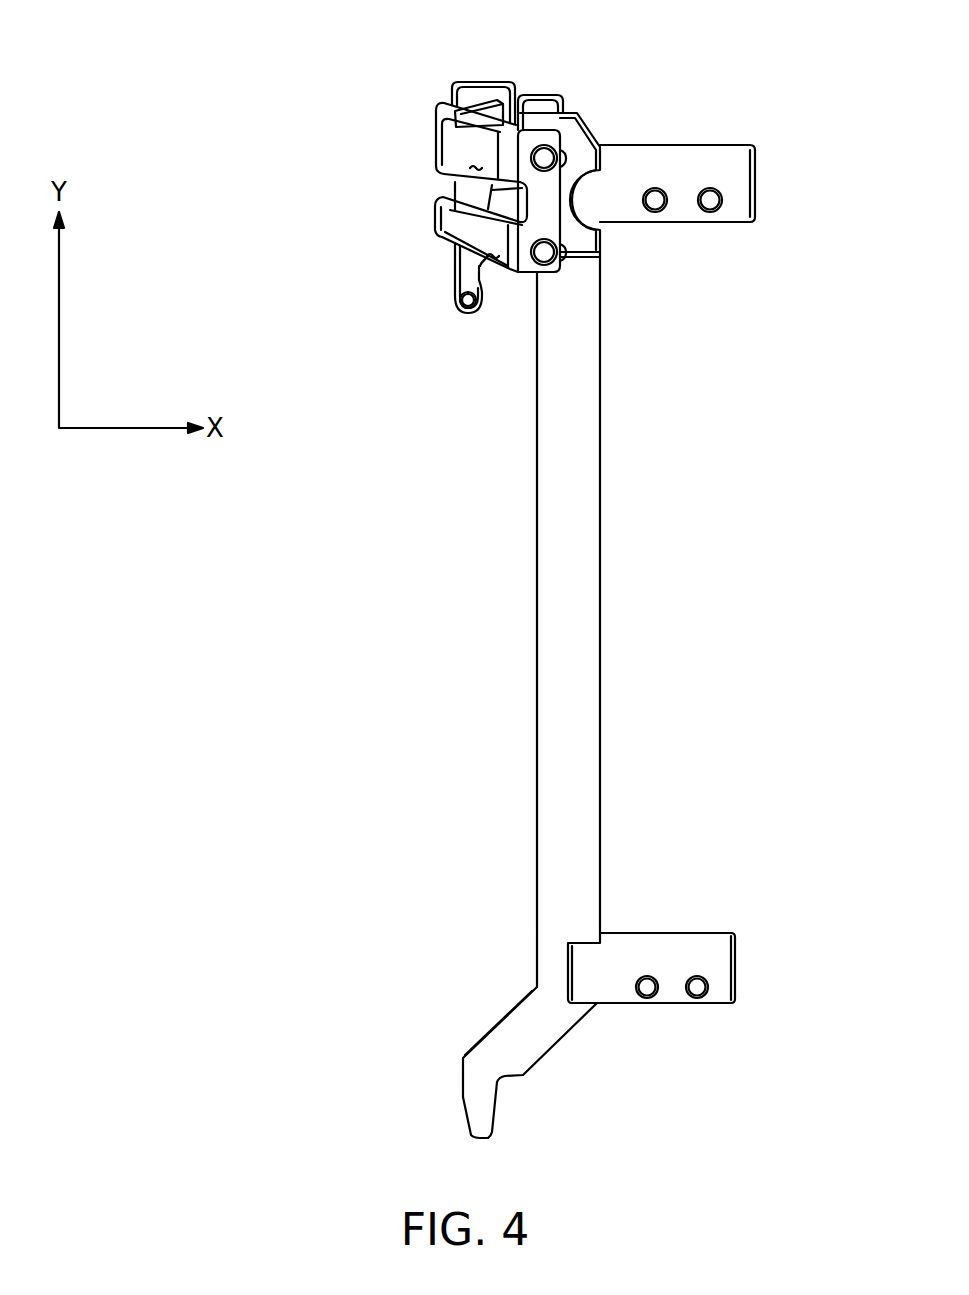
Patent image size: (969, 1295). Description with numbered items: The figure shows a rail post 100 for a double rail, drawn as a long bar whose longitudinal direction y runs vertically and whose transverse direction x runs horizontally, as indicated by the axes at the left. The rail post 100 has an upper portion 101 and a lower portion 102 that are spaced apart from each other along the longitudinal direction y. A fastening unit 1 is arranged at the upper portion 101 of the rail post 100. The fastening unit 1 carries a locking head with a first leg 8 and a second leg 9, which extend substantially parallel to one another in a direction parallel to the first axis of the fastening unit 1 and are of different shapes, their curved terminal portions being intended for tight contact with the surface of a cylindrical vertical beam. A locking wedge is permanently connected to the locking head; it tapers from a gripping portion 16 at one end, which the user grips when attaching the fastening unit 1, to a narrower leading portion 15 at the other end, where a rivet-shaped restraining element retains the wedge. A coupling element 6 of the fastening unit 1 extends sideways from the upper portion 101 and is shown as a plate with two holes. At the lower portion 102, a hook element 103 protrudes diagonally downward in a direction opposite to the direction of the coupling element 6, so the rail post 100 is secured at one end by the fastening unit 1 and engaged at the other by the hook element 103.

The fastening unit 1 is at (425, 88).
The coupling element 6 is at (686, 174).
The first leg 8 is at (422, 142).
The second leg 9 is at (422, 219).
The leading portion 15 is at (465, 282).
The gripping portion 16 is at (484, 100).
The rail post 100 is at (758, 557).
The upper portion 101 is at (659, 250).
The lower portion 102 is at (634, 899).
The hook element 103 is at (518, 1028).